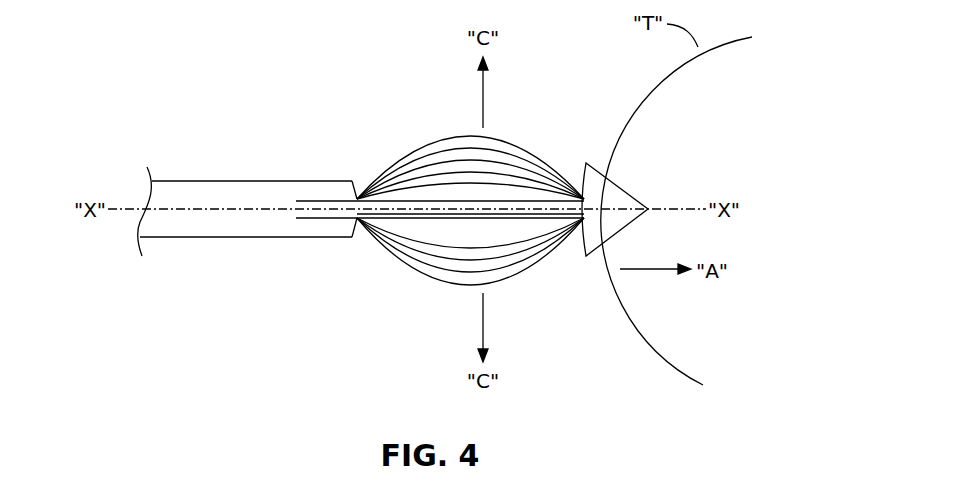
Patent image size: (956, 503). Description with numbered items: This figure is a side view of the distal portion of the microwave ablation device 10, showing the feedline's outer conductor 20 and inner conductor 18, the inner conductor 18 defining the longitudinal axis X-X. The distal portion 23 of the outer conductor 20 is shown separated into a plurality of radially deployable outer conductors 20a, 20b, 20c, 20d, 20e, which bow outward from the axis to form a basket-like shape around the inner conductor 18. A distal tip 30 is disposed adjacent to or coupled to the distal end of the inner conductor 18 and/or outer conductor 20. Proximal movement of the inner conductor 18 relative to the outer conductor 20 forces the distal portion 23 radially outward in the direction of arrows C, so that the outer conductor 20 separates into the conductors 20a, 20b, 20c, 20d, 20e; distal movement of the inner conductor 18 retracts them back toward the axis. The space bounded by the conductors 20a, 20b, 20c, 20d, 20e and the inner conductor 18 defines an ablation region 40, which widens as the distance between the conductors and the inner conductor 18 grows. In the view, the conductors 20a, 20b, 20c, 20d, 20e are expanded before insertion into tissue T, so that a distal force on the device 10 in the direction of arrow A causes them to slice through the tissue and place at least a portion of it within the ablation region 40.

The microwave ablation device 10 is at (367, 64).
The inner conductor 18 is at (487, 207).
The outer conductor 20 is at (223, 181).
The radially deployable outer conductor 20a is at (478, 280).
The radially deployable outer conductor 20b is at (447, 248).
The radially deployable outer conductor 20c is at (442, 195).
The radially deployable outer conductor 20d is at (522, 172).
The radially deployable outer conductor 20e is at (488, 138).
The distal portion 23 is at (282, 151).
The distal tip 30 is at (603, 205).
The ablation region 40 is at (481, 222).